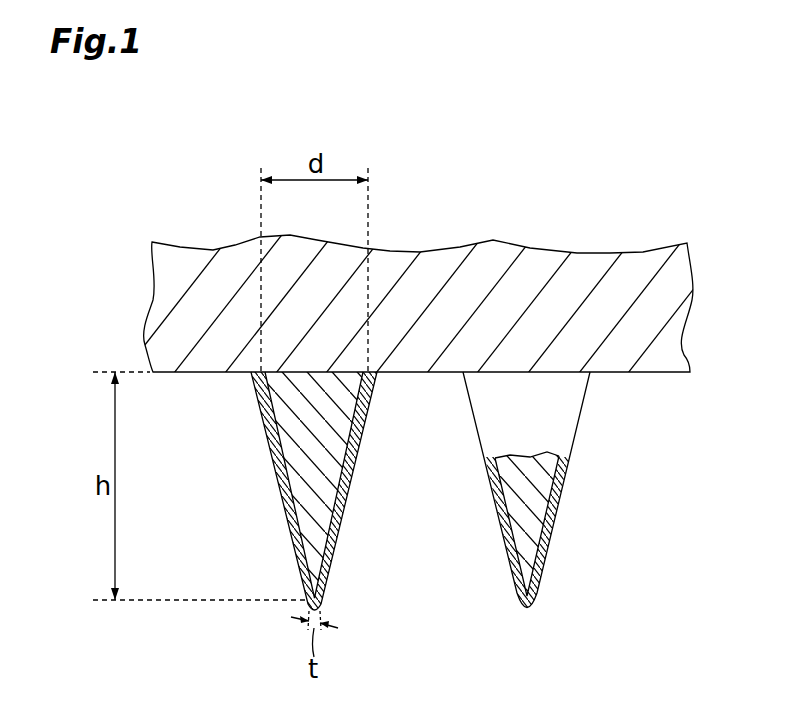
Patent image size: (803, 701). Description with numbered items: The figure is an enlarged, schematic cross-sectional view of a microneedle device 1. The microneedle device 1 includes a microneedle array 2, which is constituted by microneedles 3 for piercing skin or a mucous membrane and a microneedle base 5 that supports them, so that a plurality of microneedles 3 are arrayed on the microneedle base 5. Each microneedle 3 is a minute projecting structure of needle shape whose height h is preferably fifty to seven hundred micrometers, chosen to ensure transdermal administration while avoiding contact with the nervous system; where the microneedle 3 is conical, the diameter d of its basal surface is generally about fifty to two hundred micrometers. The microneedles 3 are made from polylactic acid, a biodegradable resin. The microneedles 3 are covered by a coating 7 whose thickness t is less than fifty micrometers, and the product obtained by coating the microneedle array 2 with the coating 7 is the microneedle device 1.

The microneedle device 1 is at (607, 176).
The microneedle array 2 is at (650, 462).
The microneedle 3 is at (347, 462).
The microneedle base 5 is at (646, 366).
The coating 7 is at (343, 512).